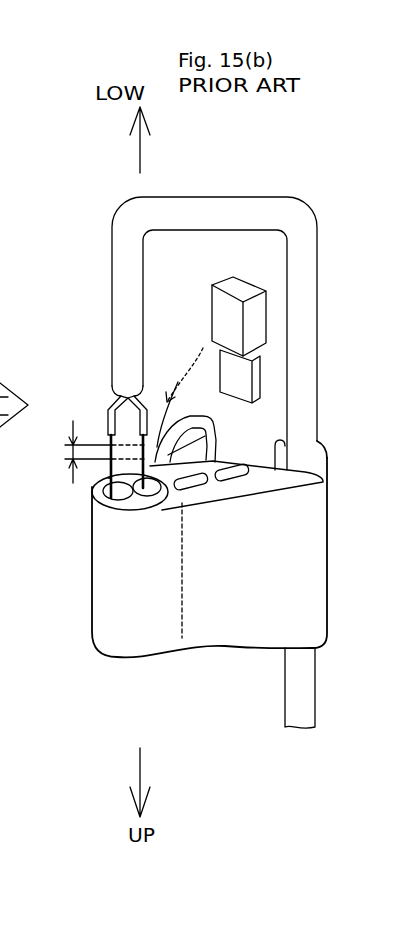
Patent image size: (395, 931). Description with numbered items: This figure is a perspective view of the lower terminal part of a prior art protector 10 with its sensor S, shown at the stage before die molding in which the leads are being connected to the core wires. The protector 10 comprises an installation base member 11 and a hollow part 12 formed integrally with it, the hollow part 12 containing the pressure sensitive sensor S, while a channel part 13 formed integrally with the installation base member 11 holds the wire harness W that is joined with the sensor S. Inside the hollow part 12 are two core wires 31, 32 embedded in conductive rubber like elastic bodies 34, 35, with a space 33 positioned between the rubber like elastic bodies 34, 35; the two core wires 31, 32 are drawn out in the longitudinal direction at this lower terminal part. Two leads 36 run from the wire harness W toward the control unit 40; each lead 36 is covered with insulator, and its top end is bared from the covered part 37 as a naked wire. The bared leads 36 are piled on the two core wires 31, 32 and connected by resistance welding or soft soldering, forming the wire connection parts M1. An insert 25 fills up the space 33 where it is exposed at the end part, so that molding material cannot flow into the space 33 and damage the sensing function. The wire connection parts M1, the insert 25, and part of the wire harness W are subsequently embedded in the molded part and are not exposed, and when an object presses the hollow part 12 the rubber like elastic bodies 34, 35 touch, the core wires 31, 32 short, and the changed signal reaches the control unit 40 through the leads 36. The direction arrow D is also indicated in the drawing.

The protector 10 is at (194, 576).
The installation base member 11 is at (302, 580).
The hollow part 12 is at (152, 642).
The channel part 13 is at (322, 459).
The insert 25 is at (211, 304).
The core wire 31 is at (109, 478).
The core wire 32 is at (180, 502).
The space 33 is at (150, 504).
The rubber like elastic body 34 is at (118, 497).
The rubber like elastic body 35 is at (158, 518).
The lead 36 is at (106, 440).
The covered part 37 is at (106, 420).
The control unit 40 is at (300, 730).
The wire harness W is at (300, 295).
The sensor S is at (110, 607).
The wire connection part M1 is at (93, 452).
The direction D is at (392, 406).